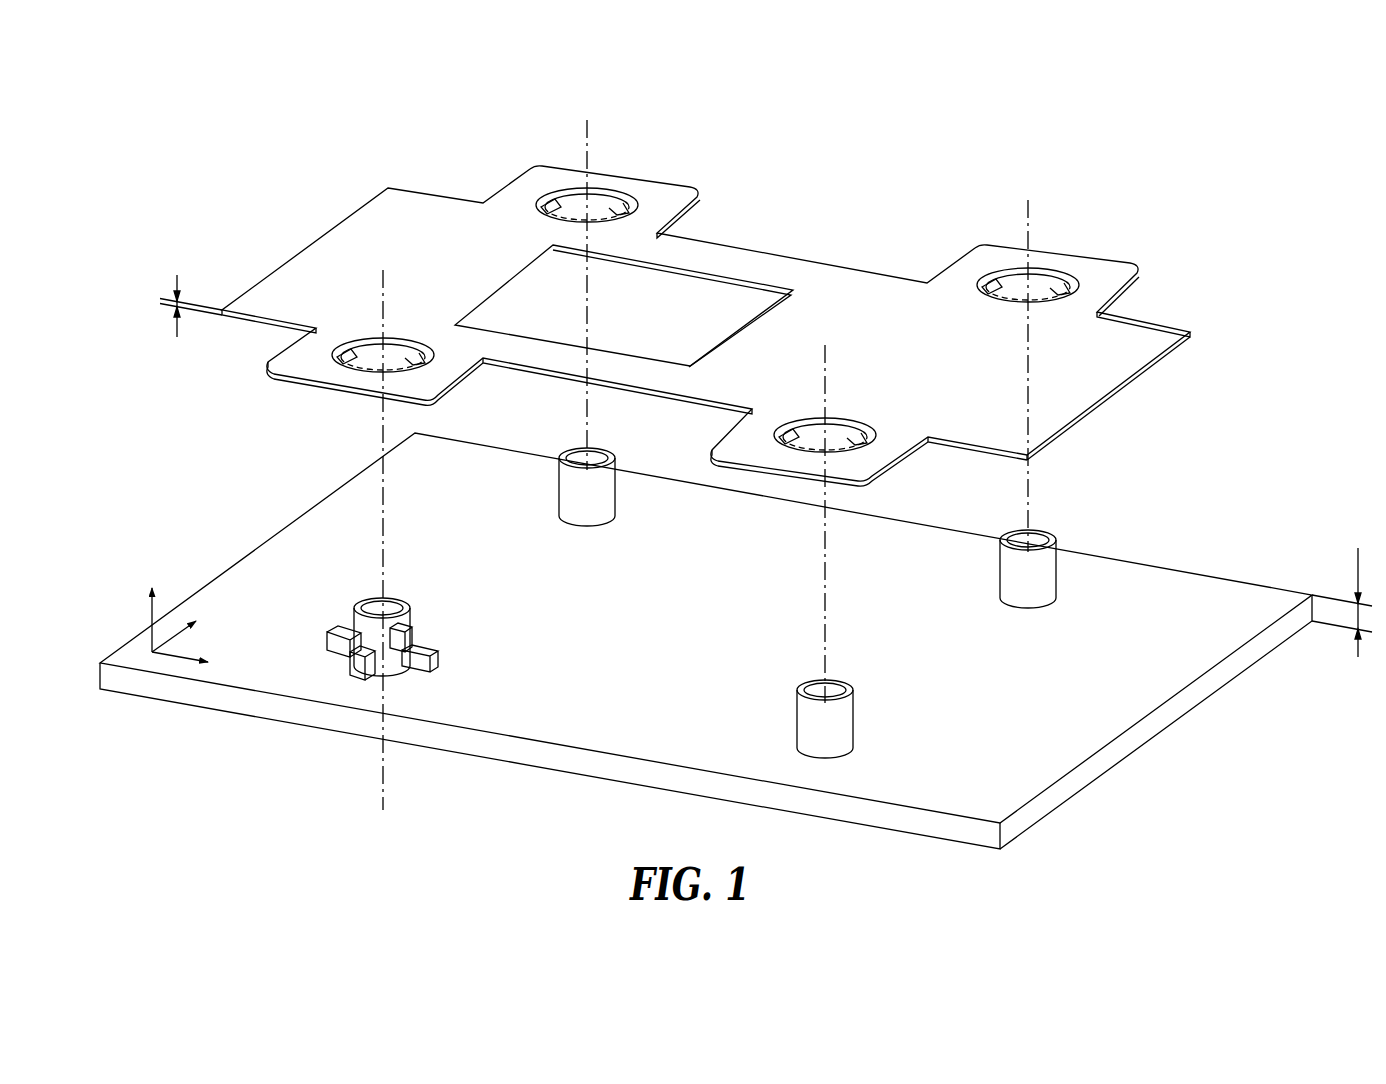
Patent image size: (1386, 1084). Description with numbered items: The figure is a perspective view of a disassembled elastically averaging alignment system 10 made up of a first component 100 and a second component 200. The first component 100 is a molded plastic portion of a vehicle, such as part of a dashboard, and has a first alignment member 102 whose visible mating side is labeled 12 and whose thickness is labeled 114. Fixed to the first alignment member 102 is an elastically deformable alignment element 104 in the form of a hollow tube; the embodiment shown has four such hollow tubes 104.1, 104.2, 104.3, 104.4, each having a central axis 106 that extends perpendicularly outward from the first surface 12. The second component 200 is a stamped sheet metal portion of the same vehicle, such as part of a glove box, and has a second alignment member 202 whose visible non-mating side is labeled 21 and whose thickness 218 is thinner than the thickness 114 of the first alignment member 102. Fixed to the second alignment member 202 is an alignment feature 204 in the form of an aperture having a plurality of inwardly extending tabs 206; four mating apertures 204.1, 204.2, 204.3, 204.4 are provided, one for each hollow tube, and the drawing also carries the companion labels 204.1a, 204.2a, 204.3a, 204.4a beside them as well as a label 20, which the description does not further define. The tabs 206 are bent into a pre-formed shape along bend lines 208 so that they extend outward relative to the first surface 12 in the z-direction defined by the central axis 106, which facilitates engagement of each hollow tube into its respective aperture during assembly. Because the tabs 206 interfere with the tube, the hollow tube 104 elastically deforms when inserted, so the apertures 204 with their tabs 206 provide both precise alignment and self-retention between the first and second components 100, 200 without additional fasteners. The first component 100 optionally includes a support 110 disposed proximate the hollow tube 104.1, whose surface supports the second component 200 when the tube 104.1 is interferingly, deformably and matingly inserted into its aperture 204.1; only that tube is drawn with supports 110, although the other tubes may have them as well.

The elastically averaging alignment system 10 is at (294, 166).
The mating side of the first alignment member 12 is at (1188, 631).
The mounting axis 20 is at (381, 500).
The non-mating side of the second alignment member 21 is at (801, 356).
The first component 100 is at (736, 641).
The first alignment member 102 is at (1164, 731).
The elastically deformable alignment element 104 is at (858, 713).
The hollow tube 104.1 is at (407, 601).
The hollow tube 104.2 is at (555, 486).
The hollow tube 104.3 is at (1064, 572).
The hollow tube 104.4 is at (791, 726).
The central axis 106 is at (643, 472).
The support 110 is at (339, 632).
The thickness of the first alignment member 114 is at (1358, 549).
The second component 200 is at (835, 263).
The second alignment member 202 is at (1121, 388).
The alignment feature 204 is at (1045, 268).
The mating aperture 204.1 is at (312, 285).
The first aperture spring tongue 204.1a is at (372, 338).
The mating aperture 204.2 is at (537, 167).
The second aperture spring tongue 204.2a is at (583, 199).
The mating aperture 204.3 is at (1116, 235).
The third aperture spring tongue 204.3a is at (1102, 315).
The mating aperture 204.4 is at (923, 408).
The fourth aperture spring tongue 204.4a is at (842, 418).
The inwardly extending tabs 206 is at (996, 277).
The bend lines 208 is at (1009, 303).
The thickness of the second alignment member 218 is at (177, 276).